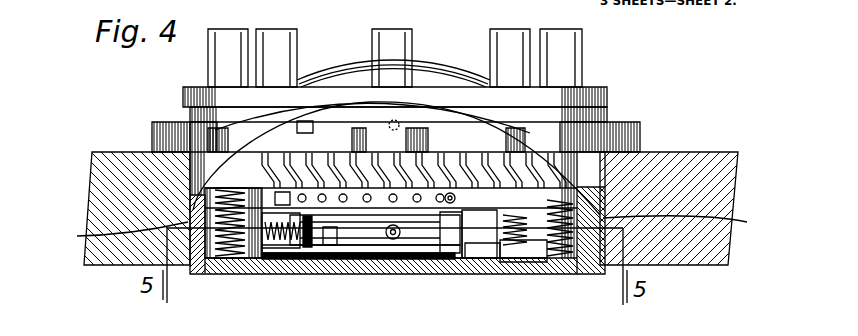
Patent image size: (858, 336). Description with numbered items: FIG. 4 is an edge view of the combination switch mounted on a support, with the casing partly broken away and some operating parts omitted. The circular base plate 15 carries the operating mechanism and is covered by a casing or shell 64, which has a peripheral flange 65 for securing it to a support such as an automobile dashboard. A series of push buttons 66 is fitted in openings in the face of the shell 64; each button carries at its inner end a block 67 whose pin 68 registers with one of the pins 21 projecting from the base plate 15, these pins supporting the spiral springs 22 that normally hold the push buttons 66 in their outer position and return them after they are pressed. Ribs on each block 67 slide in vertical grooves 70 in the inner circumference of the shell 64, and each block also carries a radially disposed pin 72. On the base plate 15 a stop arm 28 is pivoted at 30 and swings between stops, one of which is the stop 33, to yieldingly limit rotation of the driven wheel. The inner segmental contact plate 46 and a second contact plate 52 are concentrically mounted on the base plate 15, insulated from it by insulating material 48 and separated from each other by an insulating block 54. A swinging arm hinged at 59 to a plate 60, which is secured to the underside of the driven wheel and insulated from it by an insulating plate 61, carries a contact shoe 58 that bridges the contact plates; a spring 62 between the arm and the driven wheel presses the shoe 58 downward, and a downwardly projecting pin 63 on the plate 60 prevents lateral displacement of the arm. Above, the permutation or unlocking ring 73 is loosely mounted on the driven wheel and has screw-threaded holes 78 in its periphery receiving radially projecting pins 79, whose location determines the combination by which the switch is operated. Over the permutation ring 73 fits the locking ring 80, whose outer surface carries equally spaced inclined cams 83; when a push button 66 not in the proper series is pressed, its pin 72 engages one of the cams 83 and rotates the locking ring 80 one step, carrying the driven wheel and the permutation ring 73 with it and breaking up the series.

The base plate 15 is at (480, 262).
The pins 21 is at (217, 272).
The spiral springs 22 is at (195, 270).
The stop arm 28 is at (512, 260).
The pivot 30 is at (532, 274).
The stop 33 is at (472, 274).
The inner segmental contact plate 46 is at (273, 274).
The insulating material 48 is at (427, 274).
The contact plate 52 is at (385, 274).
The insulating block 54 is at (350, 274).
The contact shoe 58 is at (305, 262).
The hinge 59 is at (394, 241).
The plate 60 is at (372, 274).
The insulating plate 61 is at (453, 274).
The spring 62 is at (330, 274).
The pin 63 is at (358, 274).
The casing 64 is at (188, 173).
The peripheral flange 65 is at (165, 122).
The push buttons 66 is at (262, 24).
The block 67 is at (300, 128).
The pin 68 is at (673, 153).
The vertical grooves 70 is at (411, 229).
The pin 72 is at (314, 127).
The permutation ring 73 is at (562, 145).
The screw-threaded holes 78 is at (420, 195).
The pins 79 is at (452, 193).
The locking ring 80 is at (397, 121).
The inclined cams 83 is at (390, 150).